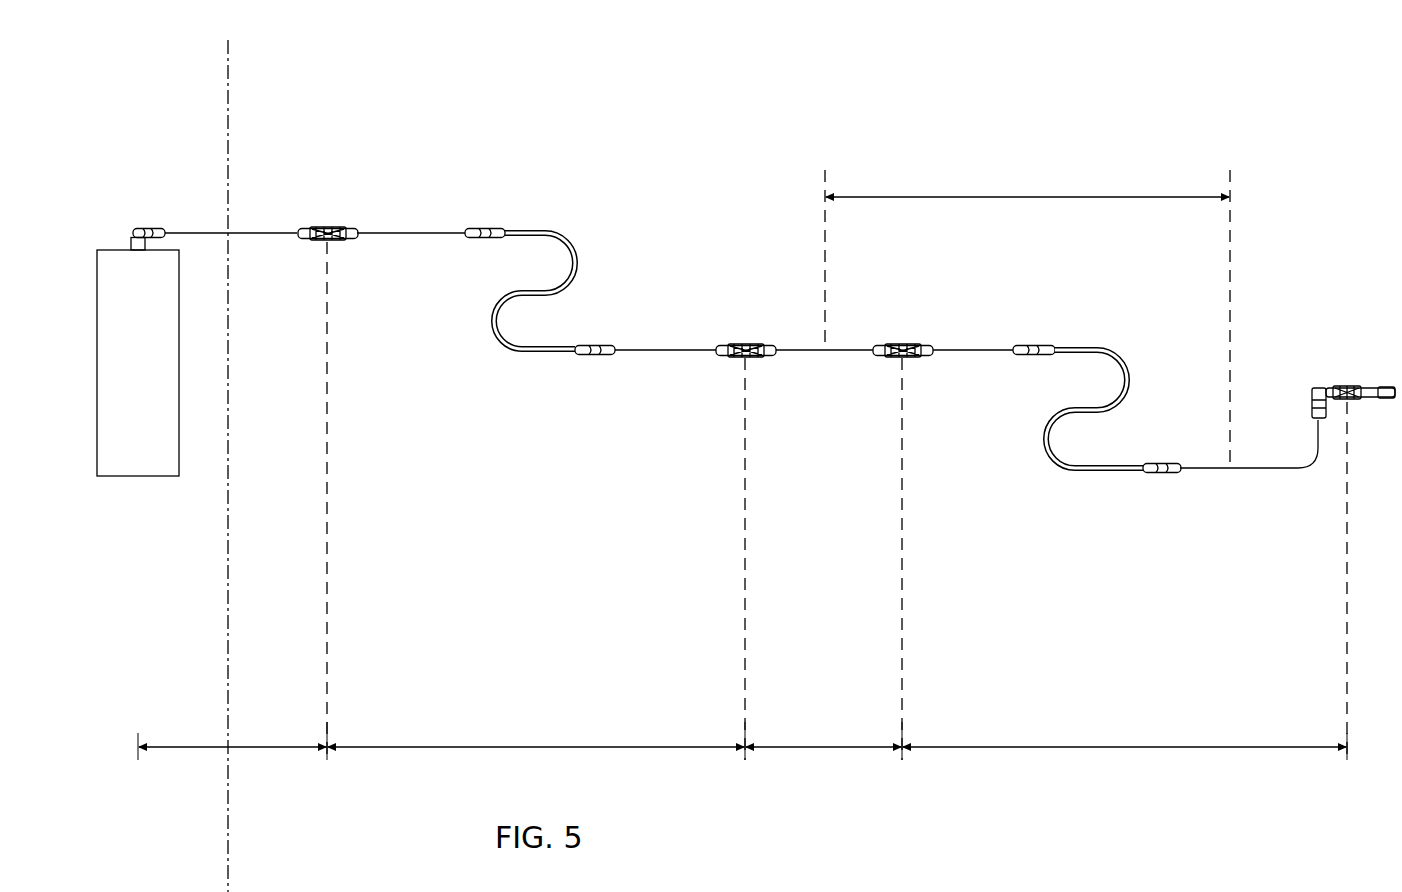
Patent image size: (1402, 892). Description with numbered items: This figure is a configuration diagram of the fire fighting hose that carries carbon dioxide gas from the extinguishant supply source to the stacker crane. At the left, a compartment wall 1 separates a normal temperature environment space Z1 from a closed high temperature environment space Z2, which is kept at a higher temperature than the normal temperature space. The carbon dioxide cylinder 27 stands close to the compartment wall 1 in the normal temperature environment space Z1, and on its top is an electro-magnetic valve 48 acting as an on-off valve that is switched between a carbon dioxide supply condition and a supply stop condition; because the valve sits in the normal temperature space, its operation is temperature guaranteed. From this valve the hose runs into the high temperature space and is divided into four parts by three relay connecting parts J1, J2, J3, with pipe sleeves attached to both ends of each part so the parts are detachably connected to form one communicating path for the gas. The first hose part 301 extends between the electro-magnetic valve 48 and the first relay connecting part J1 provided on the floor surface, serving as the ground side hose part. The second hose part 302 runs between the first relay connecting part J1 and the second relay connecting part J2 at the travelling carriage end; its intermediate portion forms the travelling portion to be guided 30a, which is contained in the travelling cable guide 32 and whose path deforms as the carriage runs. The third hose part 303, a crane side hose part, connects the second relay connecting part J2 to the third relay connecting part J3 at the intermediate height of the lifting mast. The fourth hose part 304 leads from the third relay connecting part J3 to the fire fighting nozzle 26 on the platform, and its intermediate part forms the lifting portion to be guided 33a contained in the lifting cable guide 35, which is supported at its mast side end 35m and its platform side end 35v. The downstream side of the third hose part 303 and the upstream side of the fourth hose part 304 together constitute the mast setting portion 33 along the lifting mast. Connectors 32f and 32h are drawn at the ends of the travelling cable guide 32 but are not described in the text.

The compartment wall 1 is at (230, 810).
The normal temperature environment space Z1 is at (167, 96).
The high temperature environment space Z2 is at (311, 96).
The carbon dioxide cylinder 27 is at (125, 478).
The electro-magnetic valve 48 is at (138, 228).
The first relay connecting part J1 is at (322, 230).
The second relay connecting part J2 is at (748, 346).
The third relay connecting part J3 is at (903, 346).
The travelling cable guide 32 is at (529, 277).
The travelling portion to be guided 30a is at (545, 230).
The first tube front end connector 32f is at (472, 230).
The first tube rear end connector 32h is at (603, 356).
The mast setting portion 33 is at (1027, 320).
The lifting portion to be guided 33a is at (1126, 368).
The lifting cable guide 35 is at (1086, 399).
The mast side end 35m is at (1027, 343).
The platform side end 35v is at (1160, 475).
The fire fighting nozzle 26 is at (1375, 388).
The first hose part 301 is at (232, 763).
The second hose part 302 is at (536, 763).
The third hose part 303 is at (823, 763).
The fourth hose part 304 is at (1124, 763).